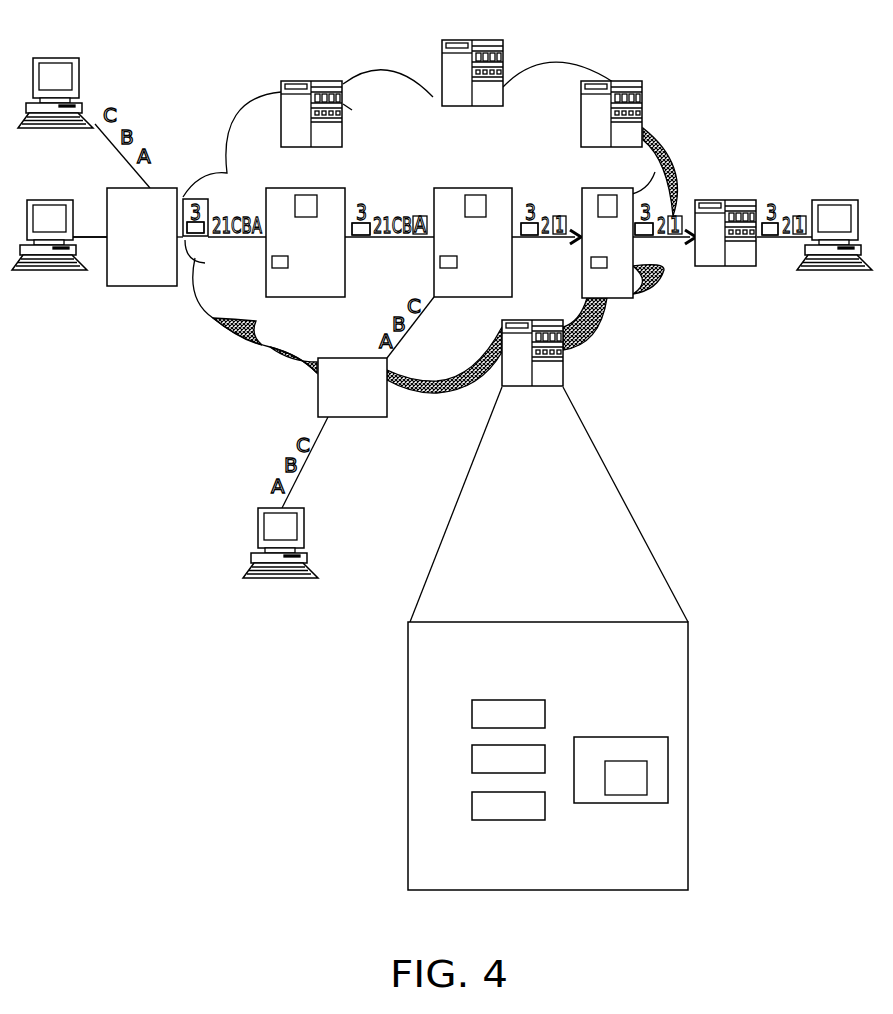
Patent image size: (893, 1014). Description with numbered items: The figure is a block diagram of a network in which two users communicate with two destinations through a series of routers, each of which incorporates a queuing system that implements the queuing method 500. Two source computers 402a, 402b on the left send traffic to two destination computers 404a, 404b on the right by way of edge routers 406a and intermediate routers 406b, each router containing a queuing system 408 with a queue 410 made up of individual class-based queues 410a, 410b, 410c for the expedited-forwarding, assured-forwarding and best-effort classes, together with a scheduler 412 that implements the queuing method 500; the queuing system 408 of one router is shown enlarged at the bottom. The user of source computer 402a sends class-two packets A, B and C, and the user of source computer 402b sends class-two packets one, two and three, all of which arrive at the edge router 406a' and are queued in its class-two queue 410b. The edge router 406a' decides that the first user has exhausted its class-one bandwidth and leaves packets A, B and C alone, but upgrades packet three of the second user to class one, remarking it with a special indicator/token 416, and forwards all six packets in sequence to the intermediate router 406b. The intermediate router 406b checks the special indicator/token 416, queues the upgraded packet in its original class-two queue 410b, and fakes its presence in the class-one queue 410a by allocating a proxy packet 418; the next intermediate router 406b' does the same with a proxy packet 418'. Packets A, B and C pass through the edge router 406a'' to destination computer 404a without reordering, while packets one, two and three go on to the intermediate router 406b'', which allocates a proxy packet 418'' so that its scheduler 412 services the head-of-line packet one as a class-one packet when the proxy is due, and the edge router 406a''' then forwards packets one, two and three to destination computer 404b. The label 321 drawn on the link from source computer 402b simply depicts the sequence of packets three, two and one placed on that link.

The source computer 402a is at (56, 58).
The source computer 402b is at (38, 200).
The destination computer 404a is at (282, 578).
The destination computer 404b is at (835, 200).
The edge router 406a is at (476, 200).
The edge router 406a' is at (160, 215).
The edge router 406a'' is at (369, 402).
The edge router 406a''' is at (746, 219).
The intermediate router 406b is at (314, 227).
The intermediate router 406b' is at (485, 227).
The intermediate router 406b'' is at (615, 224).
The queuing system 408 is at (548, 756).
The queue 410 is at (482, 760).
The class-1 queue 410a is at (508, 714).
The class-2 queue 410b is at (508, 759).
The class-3 queue 410c is at (508, 806).
The scheduler 412 is at (621, 754).
The special indicator/token 416 is at (272, 262).
The proxy packet 418 is at (283, 188).
The proxy packet 418' is at (448, 188).
The proxy packet 418'' is at (586, 188).
The data packets 321 is at (90, 223).
The queuing method 500 is at (626, 778).